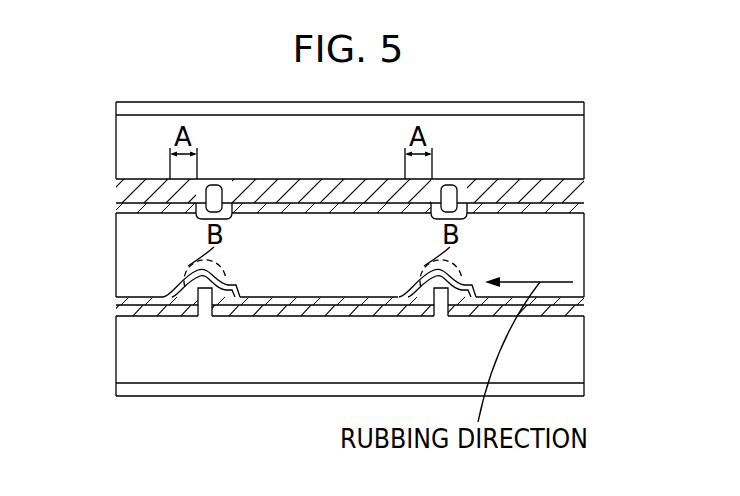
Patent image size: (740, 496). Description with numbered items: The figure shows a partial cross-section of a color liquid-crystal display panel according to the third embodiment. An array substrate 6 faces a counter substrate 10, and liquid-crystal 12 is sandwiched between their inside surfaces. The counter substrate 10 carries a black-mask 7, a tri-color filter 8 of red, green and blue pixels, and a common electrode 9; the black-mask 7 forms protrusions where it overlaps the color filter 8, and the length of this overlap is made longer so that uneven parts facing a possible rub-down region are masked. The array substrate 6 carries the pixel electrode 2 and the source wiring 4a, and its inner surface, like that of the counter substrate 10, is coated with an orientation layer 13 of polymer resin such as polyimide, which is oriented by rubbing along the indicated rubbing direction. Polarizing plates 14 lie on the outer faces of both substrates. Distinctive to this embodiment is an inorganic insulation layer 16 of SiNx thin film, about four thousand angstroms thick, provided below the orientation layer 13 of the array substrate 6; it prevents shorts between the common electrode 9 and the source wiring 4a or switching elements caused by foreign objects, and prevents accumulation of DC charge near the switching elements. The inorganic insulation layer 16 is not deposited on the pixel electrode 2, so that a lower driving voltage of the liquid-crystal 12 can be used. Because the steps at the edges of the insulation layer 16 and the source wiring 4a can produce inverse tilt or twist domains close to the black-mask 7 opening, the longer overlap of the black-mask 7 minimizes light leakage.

The pixel electrode 2 is at (546, 317).
The source wiring 4a is at (203, 318).
The array substrate 6 is at (125, 365).
The black-mask 7 is at (470, 177).
The tri-color filter 8 is at (532, 181).
The common electrode 9 is at (577, 199).
The counter substrate 10 is at (133, 137).
The liquid-crystal 12 is at (133, 237).
The orientation layer 13 is at (566, 298).
The polarizing plate 14 is at (568, 106).
The inorganic insulation layer 16 is at (176, 296).